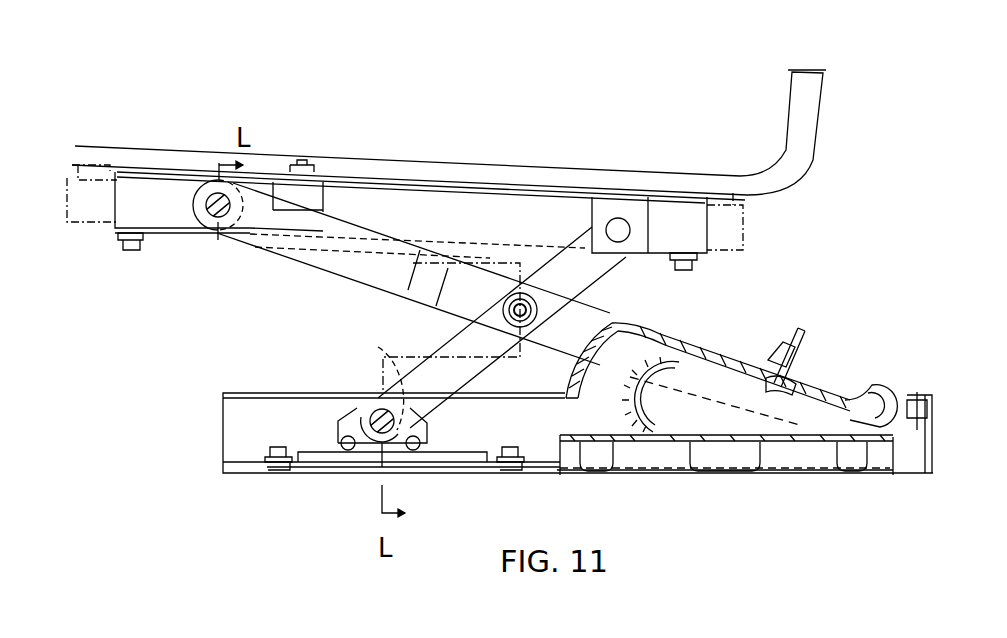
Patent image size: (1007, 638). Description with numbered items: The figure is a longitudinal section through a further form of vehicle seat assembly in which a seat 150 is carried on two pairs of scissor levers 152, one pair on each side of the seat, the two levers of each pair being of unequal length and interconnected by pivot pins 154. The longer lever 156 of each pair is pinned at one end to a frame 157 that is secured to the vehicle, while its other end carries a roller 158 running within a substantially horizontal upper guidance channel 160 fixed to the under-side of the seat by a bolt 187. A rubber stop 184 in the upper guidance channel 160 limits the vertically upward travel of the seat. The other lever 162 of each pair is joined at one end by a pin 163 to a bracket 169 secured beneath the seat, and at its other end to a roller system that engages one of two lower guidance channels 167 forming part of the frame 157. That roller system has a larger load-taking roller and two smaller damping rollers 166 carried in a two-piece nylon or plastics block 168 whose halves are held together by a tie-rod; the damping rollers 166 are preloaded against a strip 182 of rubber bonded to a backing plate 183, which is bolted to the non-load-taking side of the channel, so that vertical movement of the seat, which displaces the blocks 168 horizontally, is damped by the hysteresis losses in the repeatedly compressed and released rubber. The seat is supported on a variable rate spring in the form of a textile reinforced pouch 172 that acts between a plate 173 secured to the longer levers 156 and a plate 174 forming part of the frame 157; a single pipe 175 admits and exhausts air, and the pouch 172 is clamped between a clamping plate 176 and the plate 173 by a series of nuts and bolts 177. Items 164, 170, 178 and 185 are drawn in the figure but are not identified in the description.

The seat 150 is at (784, 152).
The scissor levers 152 is at (420, 288).
The pivot pins 154 is at (540, 307).
The longer lever 156 is at (330, 262).
The frame 157 is at (797, 458).
The roller 158 is at (206, 190).
The upper guidance channels 160 is at (172, 232).
The lever 162 is at (473, 367).
The pin 163 is at (628, 222).
The upper slide bracket 164 is at (603, 203).
The damping rollers 166 is at (348, 445).
The lower guidance channels 167 is at (260, 393).
The block 168 is at (350, 412).
The bracket 169 is at (423, 420).
The pivot pin 170 is at (398, 443).
The textile reinforced pouch 172 is at (704, 442).
The plate 173 is at (683, 342).
The plate 174 is at (606, 472).
The pipe 175 is at (780, 345).
The clamping plate 176 is at (910, 398).
The nuts and bolts 177 is at (874, 392).
The spring end 178 is at (572, 400).
The strip of rubber 182 is at (488, 467).
The backing plate 183 is at (295, 470).
The rubber stop 184 is at (315, 190).
The phantom bracket 185 is at (390, 346).
The bolt 187 is at (142, 238).